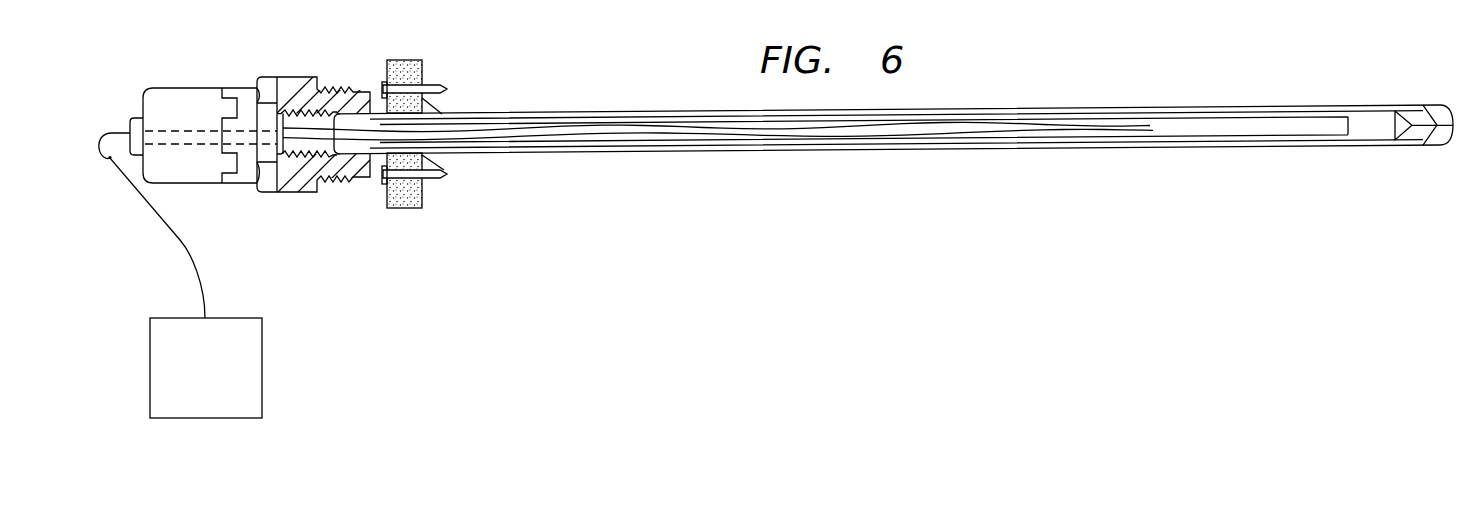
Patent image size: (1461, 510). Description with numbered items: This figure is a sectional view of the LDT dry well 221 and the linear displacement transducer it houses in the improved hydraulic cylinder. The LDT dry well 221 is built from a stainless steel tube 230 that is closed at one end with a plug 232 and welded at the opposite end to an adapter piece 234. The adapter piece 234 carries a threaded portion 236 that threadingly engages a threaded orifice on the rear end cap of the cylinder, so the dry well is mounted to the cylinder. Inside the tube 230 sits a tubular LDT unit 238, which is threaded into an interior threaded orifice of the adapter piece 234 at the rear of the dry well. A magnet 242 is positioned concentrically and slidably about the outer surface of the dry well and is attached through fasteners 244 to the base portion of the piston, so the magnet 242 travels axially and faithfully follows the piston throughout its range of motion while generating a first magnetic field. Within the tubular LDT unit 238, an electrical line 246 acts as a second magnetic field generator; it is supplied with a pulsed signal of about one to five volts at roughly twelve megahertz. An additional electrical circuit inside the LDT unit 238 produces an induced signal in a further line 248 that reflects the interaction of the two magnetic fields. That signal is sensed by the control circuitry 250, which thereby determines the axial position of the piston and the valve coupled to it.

The LDT dry well 221 is at (868, 108).
The stainless steel tube 230 is at (607, 152).
The plug 232 is at (1440, 148).
The adapter piece 234 is at (290, 192).
The threaded portion 236 is at (327, 91).
The tubular LDT unit 238 is at (1244, 118).
The magnet 242 is at (422, 198).
The fasteners 244 is at (433, 86).
The electrical line 246 is at (1140, 112).
The line 248 is at (1142, 141).
The control circuitry 250 is at (262, 378).